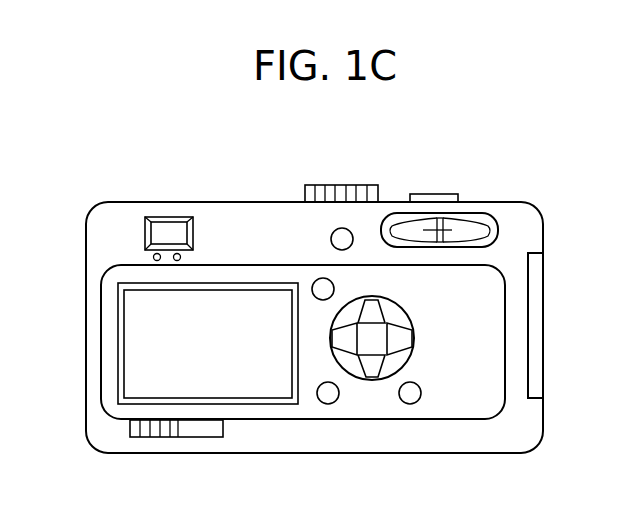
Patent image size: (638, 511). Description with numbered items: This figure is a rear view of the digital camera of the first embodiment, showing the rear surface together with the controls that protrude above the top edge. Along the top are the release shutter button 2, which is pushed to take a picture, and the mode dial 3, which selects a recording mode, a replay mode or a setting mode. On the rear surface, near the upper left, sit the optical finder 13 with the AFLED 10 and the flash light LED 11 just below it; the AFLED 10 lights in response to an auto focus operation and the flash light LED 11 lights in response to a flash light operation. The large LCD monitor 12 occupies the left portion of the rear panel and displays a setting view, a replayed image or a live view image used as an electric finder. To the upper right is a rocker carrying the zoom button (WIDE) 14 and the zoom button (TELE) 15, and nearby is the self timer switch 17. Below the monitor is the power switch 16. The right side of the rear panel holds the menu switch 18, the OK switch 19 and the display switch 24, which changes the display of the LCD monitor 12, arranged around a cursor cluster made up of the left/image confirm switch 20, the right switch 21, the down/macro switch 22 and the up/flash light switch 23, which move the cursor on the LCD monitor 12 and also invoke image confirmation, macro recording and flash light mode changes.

The release shutter button 2 is at (440, 194).
The mode dial 3 is at (338, 185).
The AFLED 10 is at (153, 257).
The flash light LED 11 is at (181, 257).
The LCD monitor 12 is at (138, 350).
The optical finder (rear) 13 is at (172, 228).
The zoom button (WIDE) 14 is at (470, 225).
The zoom button (TELE) 15 is at (480, 230).
The power switch 16 is at (173, 437).
The self timer switch 17 is at (331, 239).
The menu switch 18 is at (334, 289).
The OK switch 19 is at (322, 404).
The left/image confirm switch 20 is at (342, 341).
The right switch 21 is at (406, 338).
The down/macro switch 22 is at (375, 372).
The up/flash light switch 23 is at (372, 312).
The display switch 24 is at (421, 393).